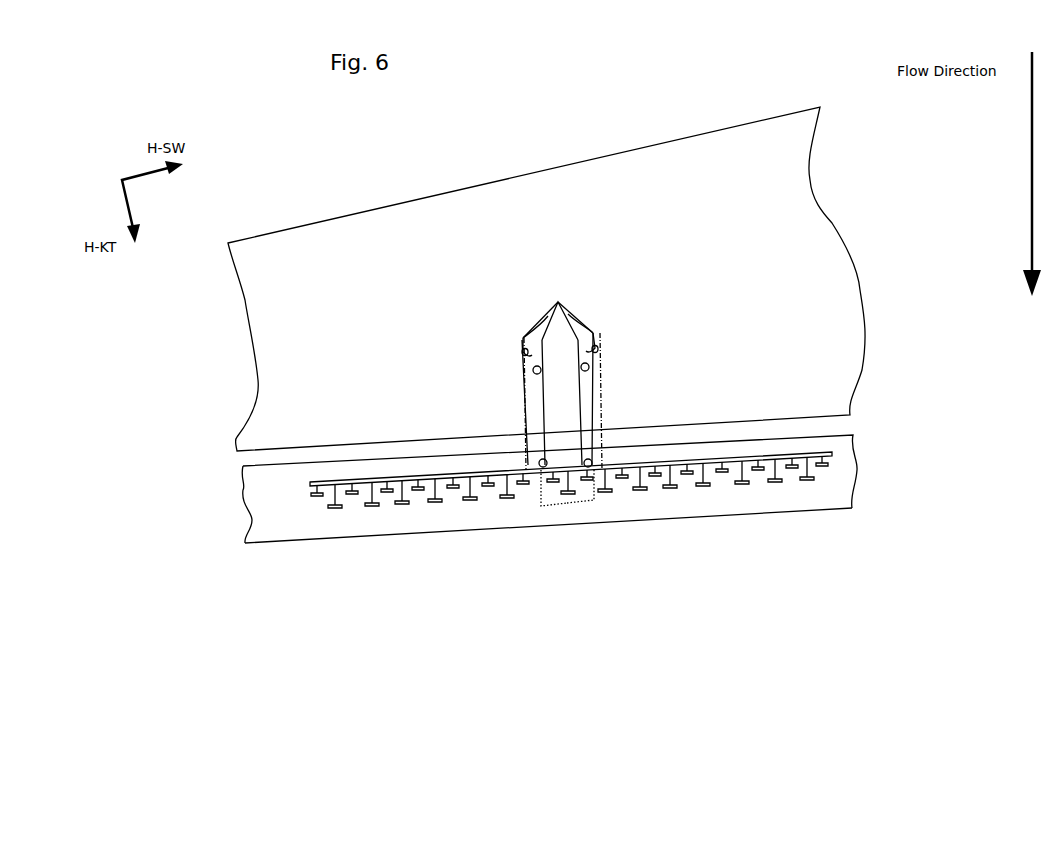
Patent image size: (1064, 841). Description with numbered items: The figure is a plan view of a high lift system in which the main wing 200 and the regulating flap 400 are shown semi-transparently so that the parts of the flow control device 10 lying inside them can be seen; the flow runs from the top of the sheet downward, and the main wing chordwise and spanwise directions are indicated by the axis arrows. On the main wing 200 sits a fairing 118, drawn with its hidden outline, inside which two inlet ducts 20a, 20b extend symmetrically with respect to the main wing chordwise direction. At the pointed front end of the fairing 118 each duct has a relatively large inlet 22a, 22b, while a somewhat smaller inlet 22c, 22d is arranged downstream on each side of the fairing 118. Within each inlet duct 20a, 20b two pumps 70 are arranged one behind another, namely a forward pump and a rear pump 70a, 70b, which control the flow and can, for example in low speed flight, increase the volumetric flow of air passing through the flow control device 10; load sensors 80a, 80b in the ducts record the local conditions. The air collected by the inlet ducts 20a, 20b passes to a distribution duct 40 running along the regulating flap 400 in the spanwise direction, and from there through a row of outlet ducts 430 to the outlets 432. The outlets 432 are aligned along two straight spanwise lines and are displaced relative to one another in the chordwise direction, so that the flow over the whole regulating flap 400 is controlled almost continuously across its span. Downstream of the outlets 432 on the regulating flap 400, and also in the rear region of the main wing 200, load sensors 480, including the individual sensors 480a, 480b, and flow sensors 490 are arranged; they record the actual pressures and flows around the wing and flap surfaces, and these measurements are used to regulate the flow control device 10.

The main wing 200 is at (815, 253).
The regulating flap 400 is at (600, 505).
The flow sensor 490 is at (280, 525).
The distribution duct 40 is at (594, 477).
The outlet duct 430 is at (569, 500).
The outlet 432 is at (713, 478).
The flow control device 10 is at (579, 368).
The inlet duct 20a is at (538, 403).
The inlet duct 20b is at (593, 440).
The inlet 22a is at (548, 320).
The inlet 22b is at (583, 320).
The inlet 22c is at (523, 350).
The inlet 22d is at (587, 348).
The pump 70 is at (533, 370).
The pump 70a is at (545, 463).
The pump 70b is at (590, 462).
The load sensor 80a is at (532, 422).
The load sensor 80b is at (598, 420).
The fairing 118 is at (597, 338).
The load sensor 480 is at (592, 580).
The load sensor 480a is at (542, 500).
The load sensor 480b is at (595, 502).